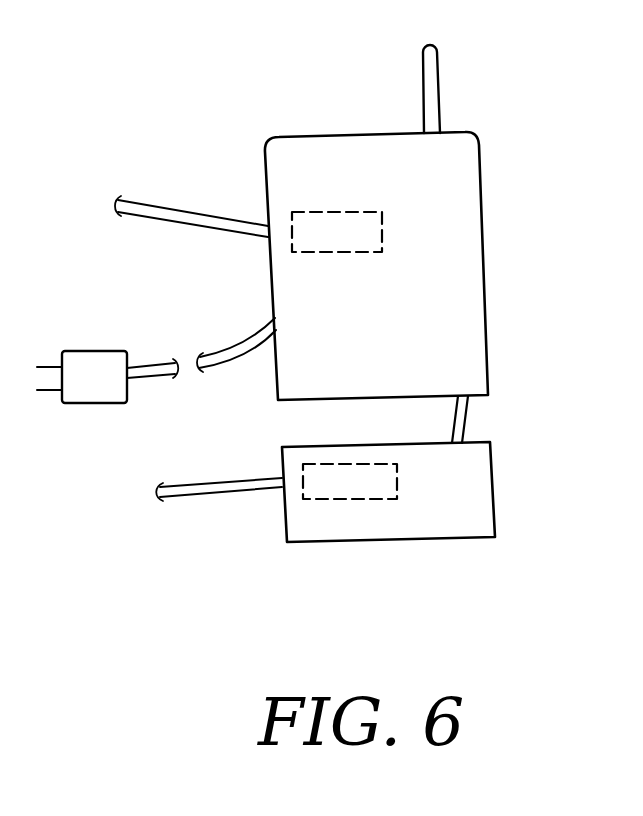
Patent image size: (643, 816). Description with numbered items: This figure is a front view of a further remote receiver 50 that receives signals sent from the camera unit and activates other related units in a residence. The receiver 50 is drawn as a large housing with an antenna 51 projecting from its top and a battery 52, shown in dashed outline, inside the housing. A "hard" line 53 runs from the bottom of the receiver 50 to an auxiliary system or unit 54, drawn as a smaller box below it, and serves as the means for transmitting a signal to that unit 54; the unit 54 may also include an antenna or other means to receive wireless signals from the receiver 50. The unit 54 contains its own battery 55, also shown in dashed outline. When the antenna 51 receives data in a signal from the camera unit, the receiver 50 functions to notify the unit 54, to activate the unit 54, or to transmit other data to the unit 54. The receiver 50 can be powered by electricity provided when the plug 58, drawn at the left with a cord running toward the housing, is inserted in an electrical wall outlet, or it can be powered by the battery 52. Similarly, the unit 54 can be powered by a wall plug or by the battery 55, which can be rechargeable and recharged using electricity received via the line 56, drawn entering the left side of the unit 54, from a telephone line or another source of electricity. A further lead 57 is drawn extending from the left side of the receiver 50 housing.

The remote receiver 50 is at (495, 193).
The antenna 51 is at (439, 76).
The battery 52 is at (338, 210).
The hard line 53 is at (466, 402).
The auxiliary system or unit 54 is at (508, 495).
The battery 55 is at (335, 500).
The line 56 is at (228, 478).
The lead wire 57 is at (208, 208).
The plug 58 is at (193, 340).